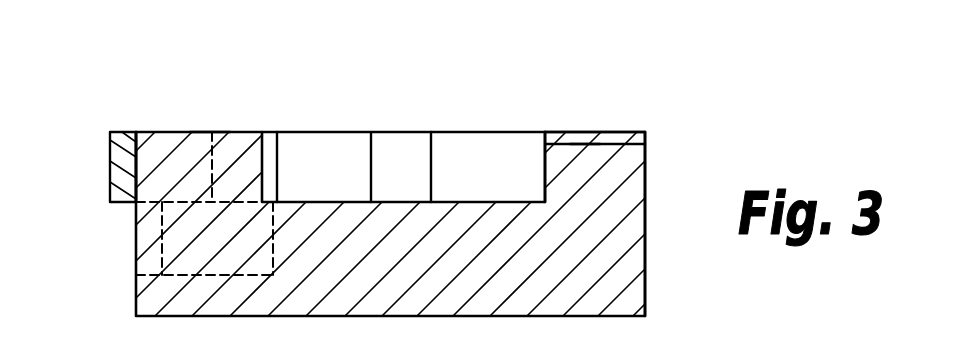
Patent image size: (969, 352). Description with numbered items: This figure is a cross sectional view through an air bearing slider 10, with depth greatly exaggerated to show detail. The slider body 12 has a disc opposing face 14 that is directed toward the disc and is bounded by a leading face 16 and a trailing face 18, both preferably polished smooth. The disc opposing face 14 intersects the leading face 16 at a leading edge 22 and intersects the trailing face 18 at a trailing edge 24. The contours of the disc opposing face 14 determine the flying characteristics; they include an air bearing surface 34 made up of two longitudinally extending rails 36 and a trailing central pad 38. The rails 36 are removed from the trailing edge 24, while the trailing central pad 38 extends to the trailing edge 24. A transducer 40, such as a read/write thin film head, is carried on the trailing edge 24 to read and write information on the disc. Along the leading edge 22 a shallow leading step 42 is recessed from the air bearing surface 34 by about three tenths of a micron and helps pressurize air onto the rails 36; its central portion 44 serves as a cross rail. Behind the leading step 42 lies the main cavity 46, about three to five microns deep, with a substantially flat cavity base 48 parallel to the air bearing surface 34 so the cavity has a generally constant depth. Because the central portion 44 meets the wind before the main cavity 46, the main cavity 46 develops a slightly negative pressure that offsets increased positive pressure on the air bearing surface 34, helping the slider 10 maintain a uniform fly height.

The air bearing slider 10 is at (497, 82).
The slider body 12 is at (592, 265).
The disc opposing face 14 is at (400, 131).
The leading face 16 is at (647, 211).
The trailing face 18 is at (135, 264).
The leading edge 22 is at (645, 145).
The trailing edge 24 is at (136, 131).
The air bearing surface 34 is at (205, 128).
The rails 36 is at (422, 131).
The trailing central pad 38 is at (165, 131).
The transducer 40 is at (115, 147).
The leading step 42 is at (617, 144).
The central portion 44 is at (579, 144).
The main cavity 46 is at (323, 202).
The cavity base 48 is at (503, 202).